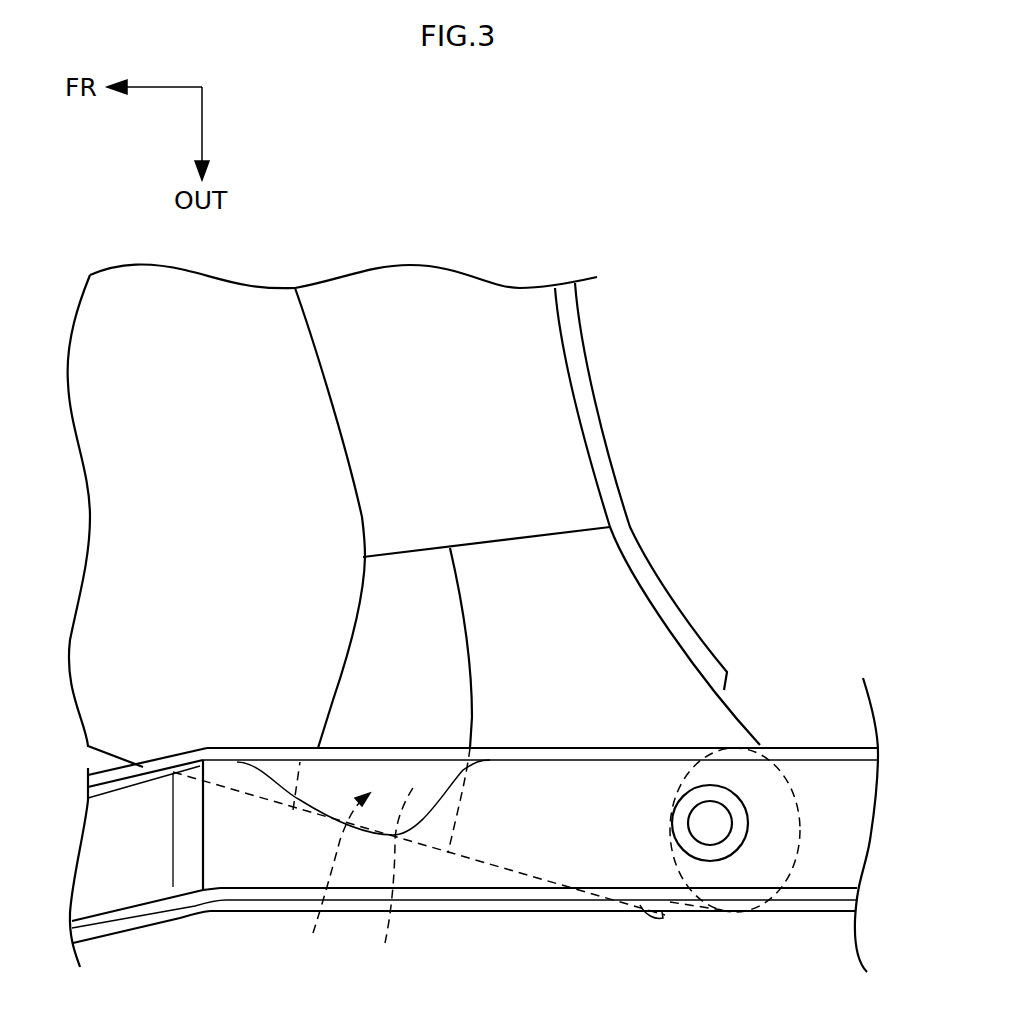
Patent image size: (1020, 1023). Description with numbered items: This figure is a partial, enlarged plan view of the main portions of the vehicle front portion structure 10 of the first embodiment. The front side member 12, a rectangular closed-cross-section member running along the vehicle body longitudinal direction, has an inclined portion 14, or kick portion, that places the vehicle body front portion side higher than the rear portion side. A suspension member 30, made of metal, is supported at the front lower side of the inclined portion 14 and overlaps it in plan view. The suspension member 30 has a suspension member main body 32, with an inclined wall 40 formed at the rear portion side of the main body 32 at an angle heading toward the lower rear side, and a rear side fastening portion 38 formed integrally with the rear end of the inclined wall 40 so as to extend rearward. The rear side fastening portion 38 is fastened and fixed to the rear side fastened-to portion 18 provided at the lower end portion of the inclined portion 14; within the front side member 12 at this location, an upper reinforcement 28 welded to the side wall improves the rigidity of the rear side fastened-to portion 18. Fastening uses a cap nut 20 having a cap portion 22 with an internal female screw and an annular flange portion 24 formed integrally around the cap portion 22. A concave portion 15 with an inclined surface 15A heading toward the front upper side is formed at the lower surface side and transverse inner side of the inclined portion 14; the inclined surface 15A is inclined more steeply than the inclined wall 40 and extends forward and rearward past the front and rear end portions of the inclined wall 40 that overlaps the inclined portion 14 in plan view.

The vehicle front portion structure 10 is at (300, 669).
The front side member 12 is at (821, 735).
The inclined portion 14 is at (453, 913).
The concave portion 15 is at (323, 873).
The inclined surface 15A is at (388, 880).
The rear side fastened-to portion 18 is at (762, 818).
The cap nut 20 is at (712, 827).
The cap portion 22 is at (715, 797).
The flange portion 24 is at (735, 842).
The upper reinforcement 28 is at (248, 865).
The suspension member 30 is at (586, 344).
The suspension member main body 32 is at (112, 525).
The rear side fastening portion 38 is at (777, 847).
The inclined wall 40 is at (390, 638).